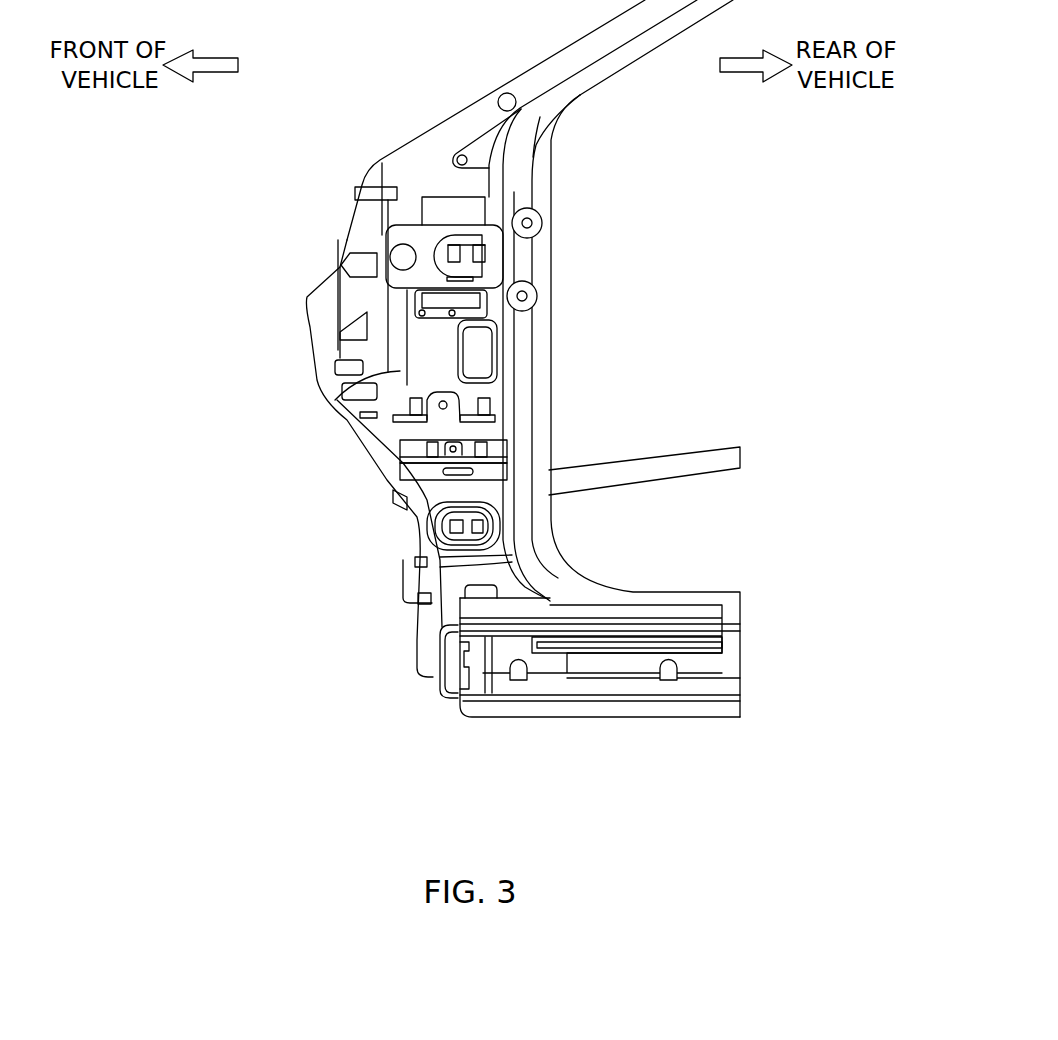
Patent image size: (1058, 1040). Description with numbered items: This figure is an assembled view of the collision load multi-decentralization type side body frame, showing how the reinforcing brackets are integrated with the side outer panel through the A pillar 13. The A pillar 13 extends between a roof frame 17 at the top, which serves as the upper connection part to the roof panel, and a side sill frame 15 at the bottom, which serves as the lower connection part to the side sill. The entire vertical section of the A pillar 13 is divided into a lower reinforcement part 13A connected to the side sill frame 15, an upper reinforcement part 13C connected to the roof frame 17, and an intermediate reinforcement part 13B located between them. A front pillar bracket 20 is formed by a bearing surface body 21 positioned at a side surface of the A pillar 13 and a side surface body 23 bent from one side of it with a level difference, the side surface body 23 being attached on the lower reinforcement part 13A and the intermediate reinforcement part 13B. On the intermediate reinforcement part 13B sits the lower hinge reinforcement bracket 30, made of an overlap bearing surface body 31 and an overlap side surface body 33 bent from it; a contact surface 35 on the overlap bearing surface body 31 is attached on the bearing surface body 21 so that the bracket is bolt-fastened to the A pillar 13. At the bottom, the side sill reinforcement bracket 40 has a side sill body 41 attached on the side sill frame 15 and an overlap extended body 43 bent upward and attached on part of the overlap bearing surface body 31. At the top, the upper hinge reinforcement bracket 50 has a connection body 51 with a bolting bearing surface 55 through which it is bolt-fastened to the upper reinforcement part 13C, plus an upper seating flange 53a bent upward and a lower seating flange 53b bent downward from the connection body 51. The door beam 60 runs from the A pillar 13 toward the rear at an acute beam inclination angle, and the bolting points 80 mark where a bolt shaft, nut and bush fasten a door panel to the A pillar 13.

The A pillar 13 is at (542, 343).
The lower reinforcement part 13A is at (179, 655).
The intermediate reinforcement part 13B is at (179, 423).
The upper reinforcement part 13C is at (179, 190).
The side sill frame 15 is at (705, 690).
The roof frame 17 is at (647, 40).
The front pillar bracket 20 is at (239, 347).
The bearing surface body 21 is at (335, 399).
The side surface body 23 is at (330, 353).
The lower hinge reinforcement bracket 30 is at (312, 488).
The overlap bearing surface body 31 is at (430, 489).
The overlap side surface body 33 is at (430, 533).
The contact surface 35 is at (443, 517).
The side sill reinforcement bracket 40 is at (580, 778).
The side sill body 41 is at (580, 660).
The overlap extended body 43 is at (503, 613).
The upper hinge reinforcement bracket 50 is at (637, 207).
The connection body 51 is at (493, 242).
The upper seating flange 53a is at (480, 205).
The lower seating flange 53b is at (473, 297).
The bolting bearing surface 55 is at (487, 262).
The door beam 60 is at (687, 467).
The bolting point 80 is at (478, 250).